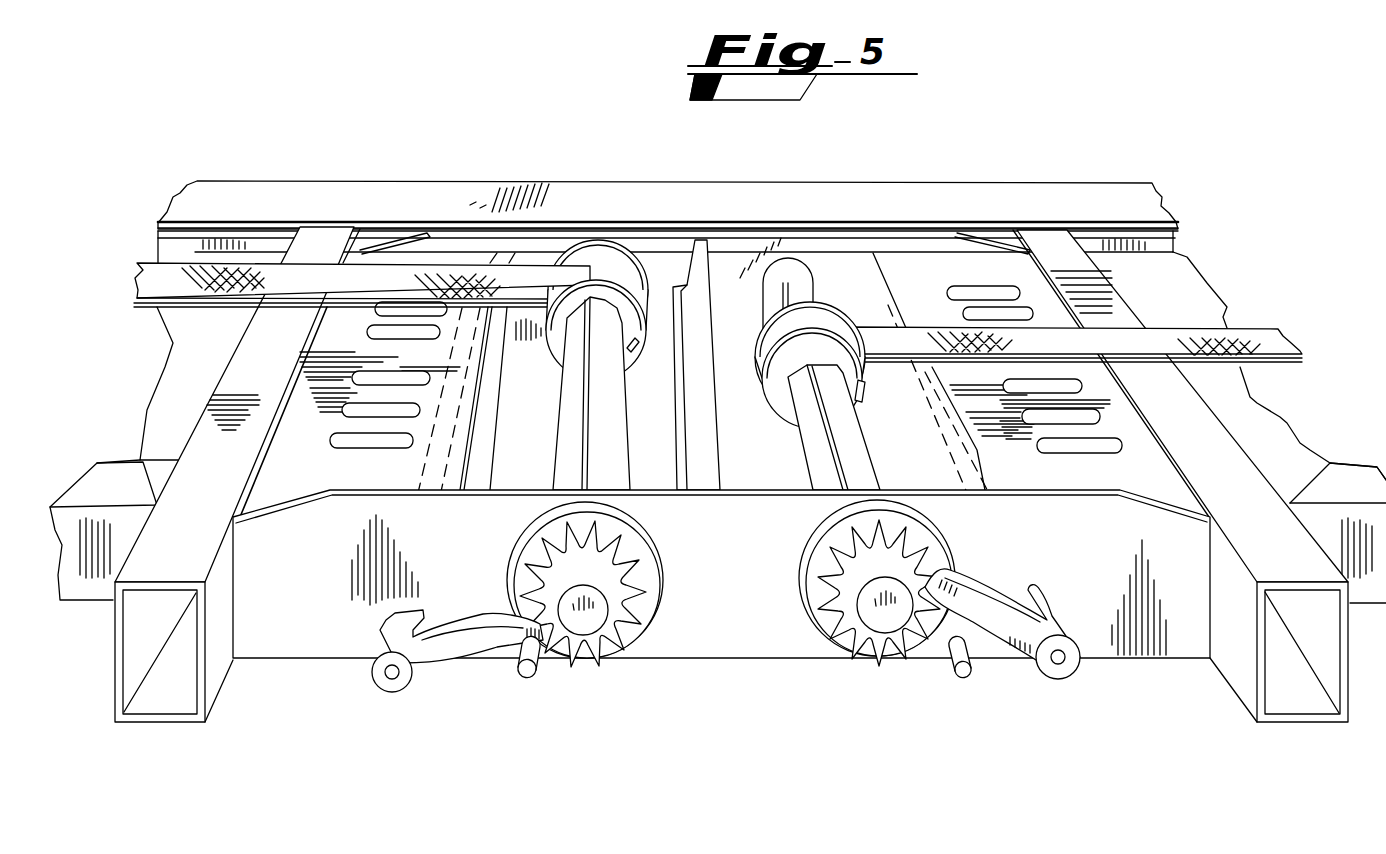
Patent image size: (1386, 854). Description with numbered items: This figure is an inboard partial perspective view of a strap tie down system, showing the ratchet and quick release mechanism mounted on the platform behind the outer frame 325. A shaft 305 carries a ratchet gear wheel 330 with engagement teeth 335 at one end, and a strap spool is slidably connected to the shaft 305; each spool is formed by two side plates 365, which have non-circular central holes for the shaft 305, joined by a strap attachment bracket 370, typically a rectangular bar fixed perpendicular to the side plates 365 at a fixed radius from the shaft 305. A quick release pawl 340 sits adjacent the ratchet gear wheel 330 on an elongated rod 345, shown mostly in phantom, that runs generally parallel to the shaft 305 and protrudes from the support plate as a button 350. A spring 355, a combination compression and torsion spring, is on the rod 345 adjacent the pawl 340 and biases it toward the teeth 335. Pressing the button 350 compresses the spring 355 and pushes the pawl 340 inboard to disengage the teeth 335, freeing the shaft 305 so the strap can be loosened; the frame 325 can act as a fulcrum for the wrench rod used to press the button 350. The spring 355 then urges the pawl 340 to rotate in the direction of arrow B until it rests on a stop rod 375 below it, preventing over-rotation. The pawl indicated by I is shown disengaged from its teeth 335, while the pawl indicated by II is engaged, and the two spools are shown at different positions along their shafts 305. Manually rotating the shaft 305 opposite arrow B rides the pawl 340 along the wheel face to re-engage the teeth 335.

The outer frame portion 325 is at (470, 183).
The side plates 365 is at (810, 317).
The strap attachment bracket 370 is at (636, 346).
The shaft 305 is at (572, 432).
The elongated rod 345 is at (433, 473).
The spring 355 is at (315, 632).
The button 350 is at (650, 613).
The engagement teeth 335 is at (612, 663).
The ratchet gear wheel 330 is at (852, 620).
The quick release pawl 340 is at (428, 672).
The stop rod 375 is at (528, 673).
The arrow B is at (362, 593).
The position I is at (581, 728).
The position II is at (885, 750).